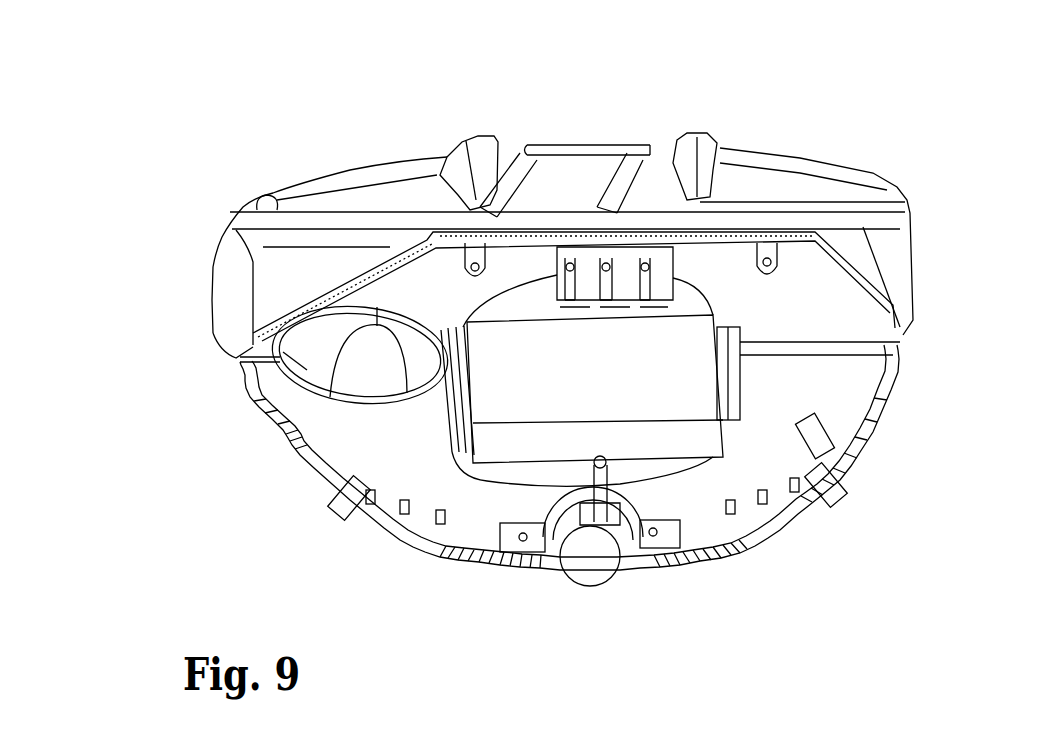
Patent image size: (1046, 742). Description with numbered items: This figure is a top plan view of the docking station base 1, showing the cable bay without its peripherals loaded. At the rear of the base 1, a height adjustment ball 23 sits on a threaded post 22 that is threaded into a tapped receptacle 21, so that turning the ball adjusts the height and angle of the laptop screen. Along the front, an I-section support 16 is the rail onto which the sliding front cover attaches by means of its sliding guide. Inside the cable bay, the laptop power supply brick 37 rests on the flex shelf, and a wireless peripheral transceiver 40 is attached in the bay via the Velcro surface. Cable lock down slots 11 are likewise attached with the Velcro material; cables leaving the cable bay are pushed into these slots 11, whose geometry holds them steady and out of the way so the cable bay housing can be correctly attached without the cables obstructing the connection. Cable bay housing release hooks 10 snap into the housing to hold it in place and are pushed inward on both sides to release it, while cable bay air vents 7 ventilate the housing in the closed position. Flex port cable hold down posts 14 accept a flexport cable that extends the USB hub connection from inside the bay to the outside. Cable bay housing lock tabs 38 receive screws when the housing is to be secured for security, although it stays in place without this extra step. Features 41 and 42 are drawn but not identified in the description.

The base 1 is at (285, 398).
The cable bay air vents 7 is at (262, 432).
The cable bay housing release hooks 10 is at (300, 477).
The cable lock down slots 11 is at (710, 562).
The flex port cable hold down posts 14 is at (344, 504).
The I-section support 16 is at (553, 147).
The tapped receptacle 21 is at (595, 520).
The threaded post 22 is at (533, 563).
The height adjustment ball 23 is at (603, 560).
The laptop power supply brick 37 is at (673, 367).
The cable bay housing lock tabs 38 is at (555, 218).
The wireless peripheral transceiver 40 is at (307, 370).
The platform 41 is at (810, 303).
The terminal block 42 is at (590, 247).